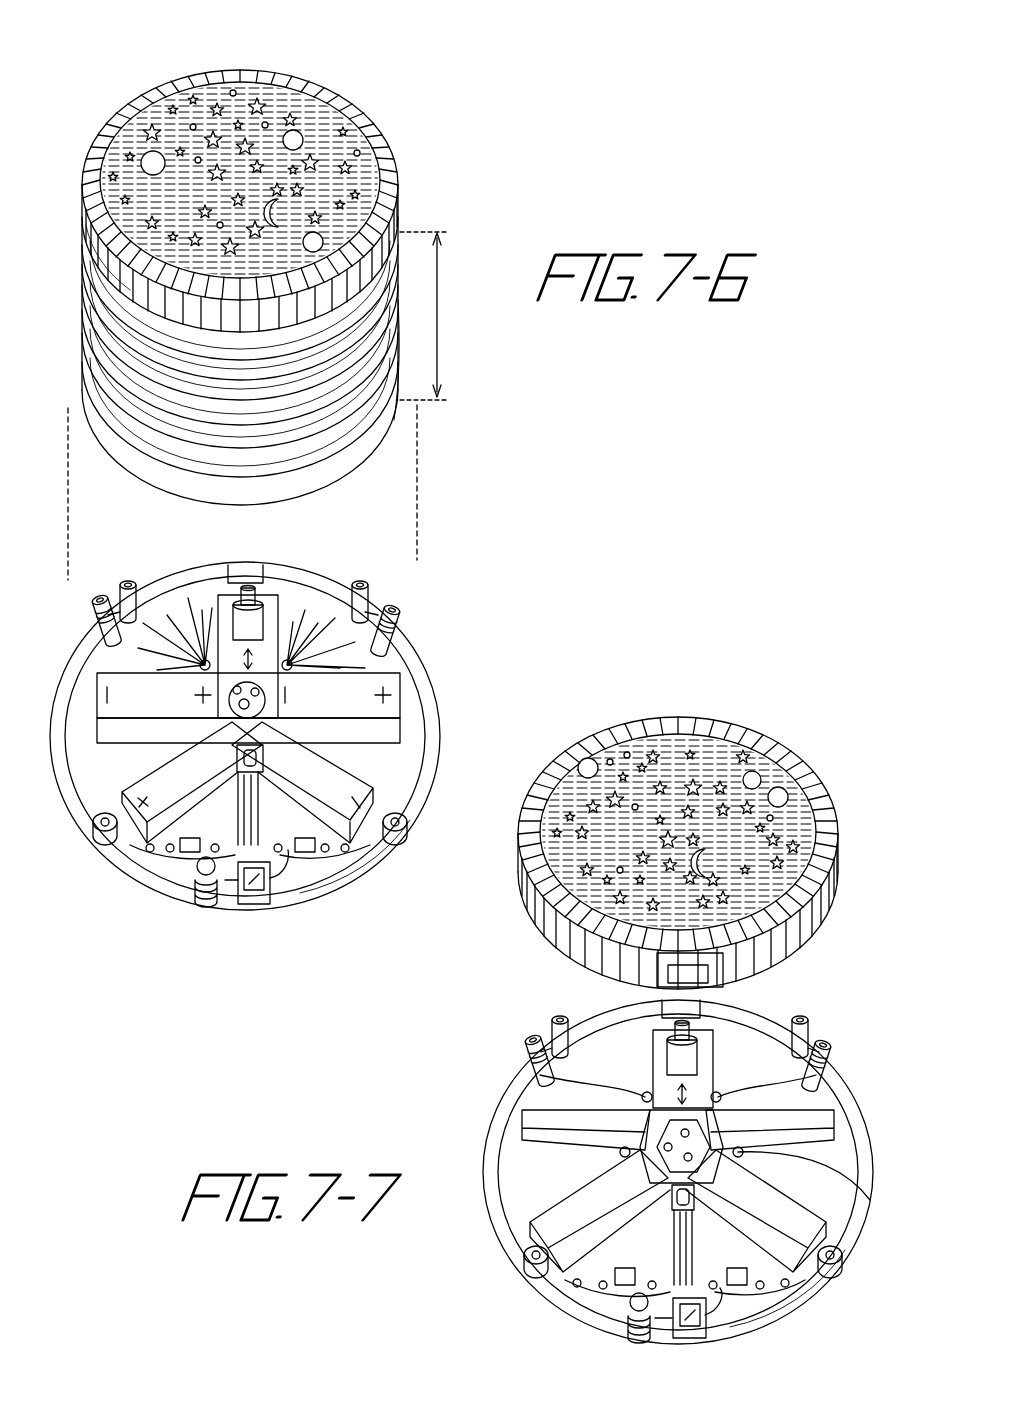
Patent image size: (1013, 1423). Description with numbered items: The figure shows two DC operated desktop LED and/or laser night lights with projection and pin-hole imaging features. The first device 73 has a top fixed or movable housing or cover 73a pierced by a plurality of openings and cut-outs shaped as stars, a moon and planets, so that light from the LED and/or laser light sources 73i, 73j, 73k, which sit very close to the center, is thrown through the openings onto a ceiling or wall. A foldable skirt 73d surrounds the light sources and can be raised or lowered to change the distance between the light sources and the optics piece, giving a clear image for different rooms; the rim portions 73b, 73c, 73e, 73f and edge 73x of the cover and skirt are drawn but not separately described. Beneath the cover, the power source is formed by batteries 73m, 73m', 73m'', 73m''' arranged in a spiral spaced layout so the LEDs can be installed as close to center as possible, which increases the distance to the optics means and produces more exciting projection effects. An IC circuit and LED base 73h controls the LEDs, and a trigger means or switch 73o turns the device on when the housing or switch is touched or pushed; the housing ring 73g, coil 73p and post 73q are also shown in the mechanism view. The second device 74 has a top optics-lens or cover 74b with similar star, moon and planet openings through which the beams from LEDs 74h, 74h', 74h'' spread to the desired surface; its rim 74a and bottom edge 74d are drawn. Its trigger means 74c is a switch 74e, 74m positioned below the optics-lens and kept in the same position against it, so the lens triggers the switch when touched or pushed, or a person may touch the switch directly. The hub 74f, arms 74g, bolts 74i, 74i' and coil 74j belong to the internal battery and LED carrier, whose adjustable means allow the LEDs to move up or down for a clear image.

In FIG. 7-6, the LED night light device with projection and/or pin-hole imaging features 73 is at (330, 140).
In FIG. 7-6, the top housing or cover 73a is at (268, 130).
In FIG. 7-6, the rim ring 73b is at (135, 100).
In FIG. 7-6, the side band 73c is at (395, 240).
In FIG. 7-6, the foldable skirt 73d is at (72, 220).
In FIG. 7-6, the ring layer 73e is at (120, 445).
In FIG. 7-6, the side wall 73f is at (375, 447).
In FIG. 7-6, the lower rim edge 73x is at (102, 230).
In FIG. 7-6, the mechanism housing ring 73g is at (140, 867).
In FIG. 7-6, the IC circuit / LED base 73h is at (290, 700).
In FIG. 7-6, the LED and/or laser light source 73i is at (260, 688).
In FIG. 7-6, the LED and/or laser light source 73j is at (290, 668).
In FIG. 7-6, the LED and/or laser light source 73k is at (205, 660).
In FIG. 7-6, the power source (battery) 73m is at (293, 731).
In FIG. 7-6, the power source (battery) 73m' is at (326, 820).
In FIG. 7-6, the power source (battery) 73m'' is at (144, 820).
In FIG. 7-6, the power source (battery) 73m''' is at (206, 776).
In FIG. 7-6, the trigger means / switch 73o is at (255, 905).
In FIG. 7-6, the coil 73p is at (205, 895).
In FIG. 7-6, the post 73q is at (100, 598).
In FIG. 7-7, the celestial lid assembly 74 is at (770, 736).
In FIG. 7-7, the top plate with star pattern 74a is at (543, 767).
In FIG. 7-7, the top optics-lens or cover 74b is at (588, 880).
In FIG. 7-7, the trigger means 74c is at (832, 868).
In FIG. 7-7, the bottom edge 74d is at (807, 933).
In FIG. 7-7, the switch 74e is at (735, 978).
In FIG. 7-7, the hexagonal hub 74f is at (695, 1133).
In FIG. 7-7, the battery arm 74g is at (830, 1135).
In FIG. 7-7, the LED 74h is at (789, 1222).
In FIG. 7-7, the LED 74h' is at (539, 1155).
In FIG. 7-7, the LED 74h'' is at (522, 1050).
In FIG. 7-7, the bolt 74i is at (834, 1312).
In FIG. 7-7, the bolt 74i' is at (497, 1299).
In FIG. 7-7, the coil 74j is at (635, 1328).
In FIG. 7-7, the switch 74m is at (700, 1335).